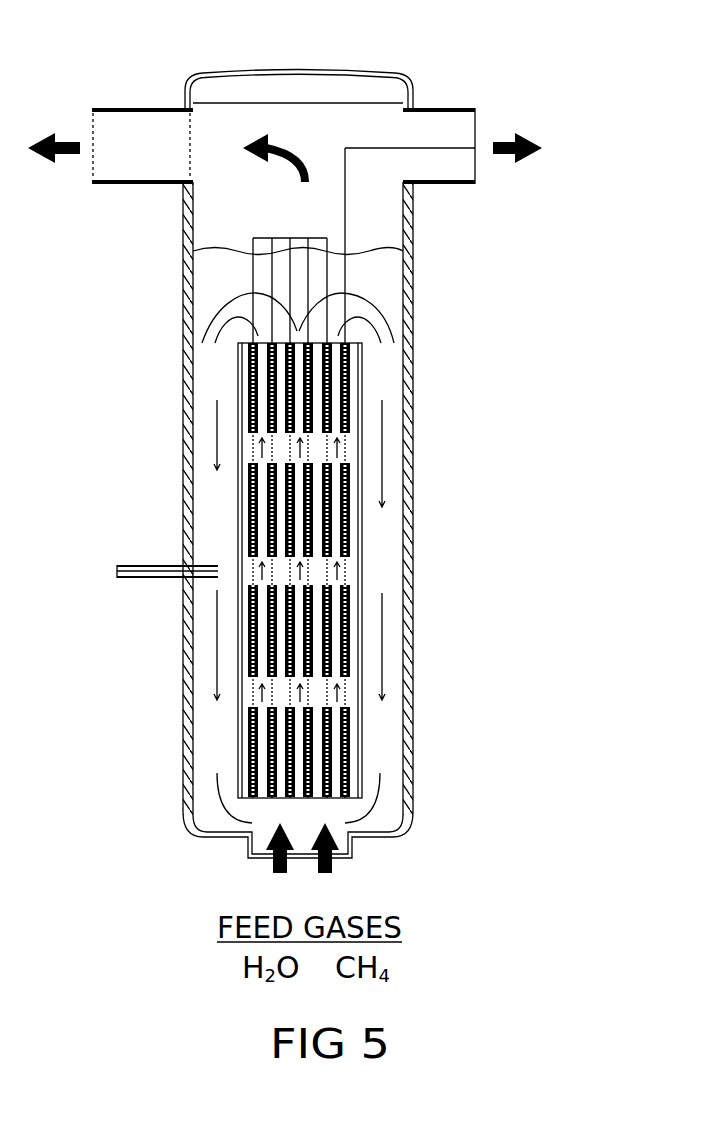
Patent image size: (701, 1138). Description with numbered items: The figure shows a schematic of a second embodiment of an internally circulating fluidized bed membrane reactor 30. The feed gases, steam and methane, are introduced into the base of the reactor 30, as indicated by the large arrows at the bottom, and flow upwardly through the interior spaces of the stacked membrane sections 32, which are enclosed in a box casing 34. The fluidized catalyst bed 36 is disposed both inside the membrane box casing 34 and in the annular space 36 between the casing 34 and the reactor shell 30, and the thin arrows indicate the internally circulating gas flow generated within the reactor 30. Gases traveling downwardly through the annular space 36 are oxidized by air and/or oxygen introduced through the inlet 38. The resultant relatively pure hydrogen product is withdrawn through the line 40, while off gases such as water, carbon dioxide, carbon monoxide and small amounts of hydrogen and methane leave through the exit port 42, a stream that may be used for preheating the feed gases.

The reactor 30 is at (412, 613).
The stacked membrane sections 32 is at (347, 400).
The box casing 34 is at (360, 443).
The fluidized catalyst bed 36 is at (218, 683).
The inlet 38 is at (165, 566).
The line 40 is at (480, 146).
The exit port 42 is at (165, 110).